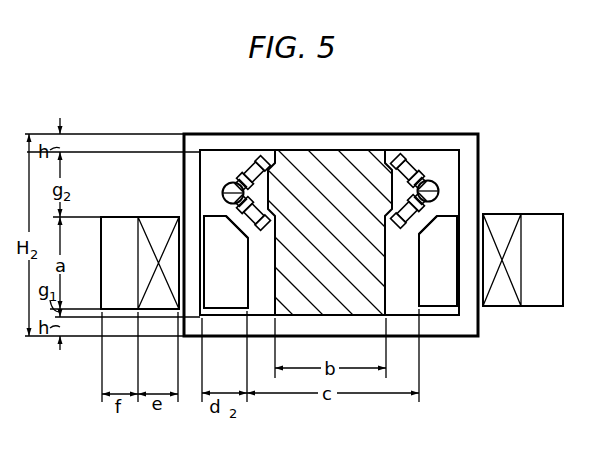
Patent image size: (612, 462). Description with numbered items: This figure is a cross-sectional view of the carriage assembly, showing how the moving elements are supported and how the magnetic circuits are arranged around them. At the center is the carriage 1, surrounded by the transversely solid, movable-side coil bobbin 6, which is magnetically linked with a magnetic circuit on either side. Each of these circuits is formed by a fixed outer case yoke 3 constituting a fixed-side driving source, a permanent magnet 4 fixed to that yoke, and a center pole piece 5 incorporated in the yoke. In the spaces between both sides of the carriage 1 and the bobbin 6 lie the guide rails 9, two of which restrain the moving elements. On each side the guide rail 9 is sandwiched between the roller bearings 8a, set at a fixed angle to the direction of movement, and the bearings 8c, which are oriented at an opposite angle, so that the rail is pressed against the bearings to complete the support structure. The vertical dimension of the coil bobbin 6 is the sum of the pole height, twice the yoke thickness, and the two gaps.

The carriage 1 is at (362, 152).
The outer case yoke 3 is at (119, 217).
The permanent magnet 4 is at (159, 217).
The center pole piece 5 is at (217, 216).
The coil bobbin 6 is at (316, 134).
The roller bearing 8a is at (246, 238).
The roller bearing 8c is at (258, 163).
The guide rail 9 is at (233, 182).